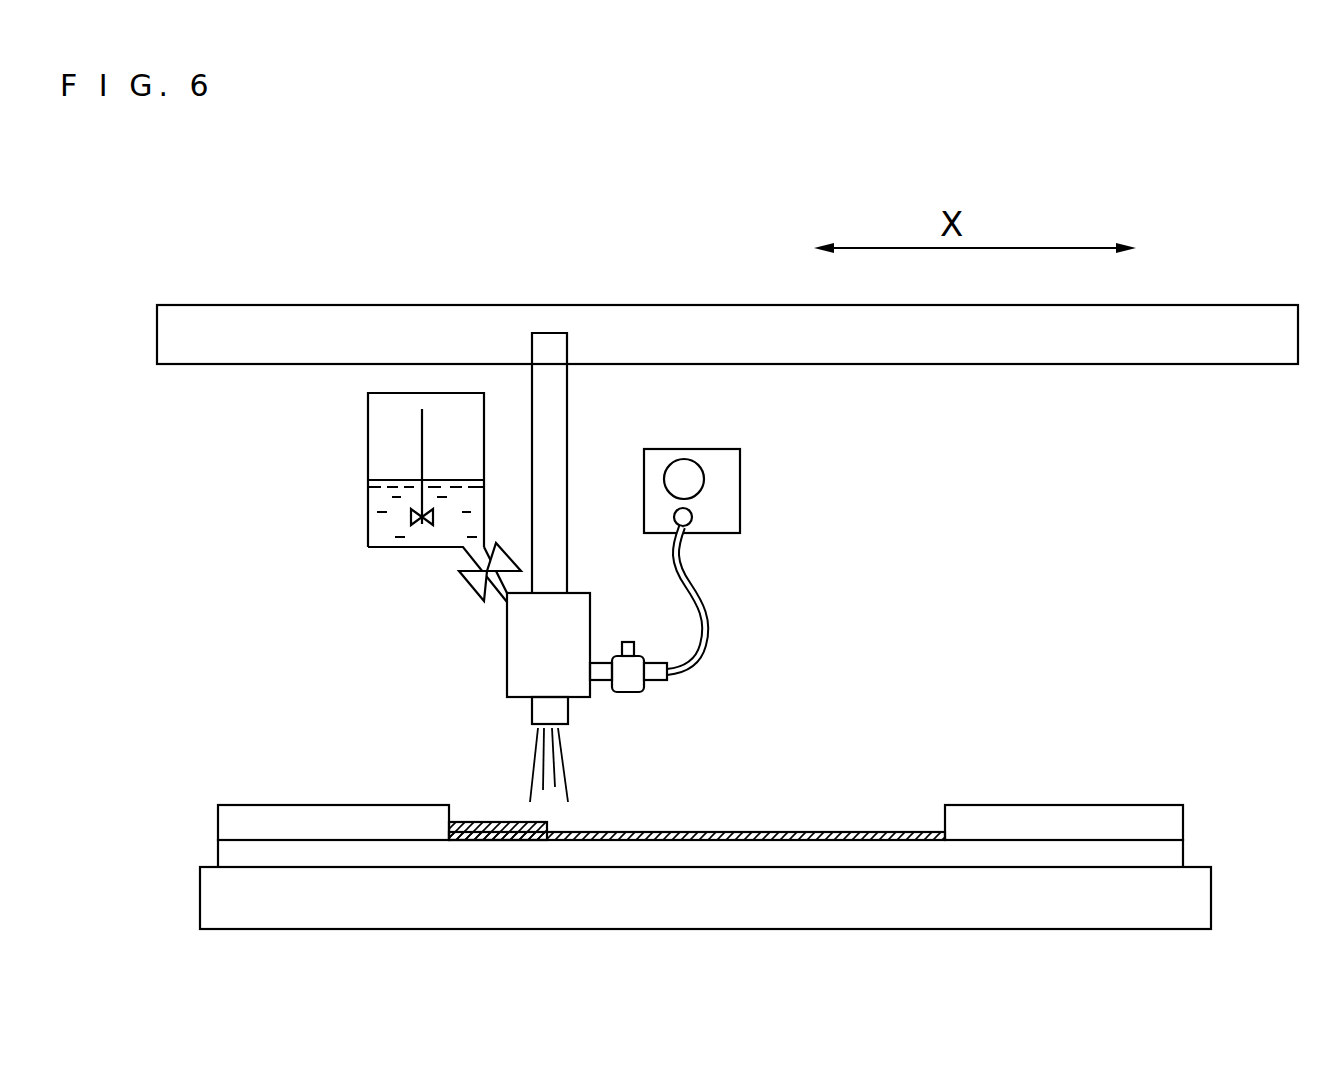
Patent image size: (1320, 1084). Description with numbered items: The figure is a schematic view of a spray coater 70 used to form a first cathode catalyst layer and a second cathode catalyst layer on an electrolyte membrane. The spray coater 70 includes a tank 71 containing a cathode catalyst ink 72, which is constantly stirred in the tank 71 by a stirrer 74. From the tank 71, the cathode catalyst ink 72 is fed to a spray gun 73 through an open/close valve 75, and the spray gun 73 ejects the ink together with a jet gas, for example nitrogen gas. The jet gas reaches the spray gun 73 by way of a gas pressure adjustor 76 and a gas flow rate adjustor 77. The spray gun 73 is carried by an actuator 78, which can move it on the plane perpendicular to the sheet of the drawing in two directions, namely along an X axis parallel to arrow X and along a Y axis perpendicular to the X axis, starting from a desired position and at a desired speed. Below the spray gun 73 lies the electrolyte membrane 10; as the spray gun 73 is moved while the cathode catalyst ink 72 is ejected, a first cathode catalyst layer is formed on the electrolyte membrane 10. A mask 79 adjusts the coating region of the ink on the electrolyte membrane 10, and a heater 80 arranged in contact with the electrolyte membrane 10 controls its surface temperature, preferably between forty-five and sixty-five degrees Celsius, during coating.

The spray coater 70 is at (1249, 266).
The actuator 78 is at (303, 318).
The spray gun 73 is at (523, 661).
The tank 71 is at (368, 461).
The cathode catalyst ink 72 is at (390, 515).
The stirrer 74 is at (420, 427).
The open/close valve 75 is at (470, 590).
The gas pressure adjustor 76 is at (725, 472).
The gas flow rate adjustor 77 is at (631, 680).
The heater 80 is at (1196, 896).
The electrolyte membrane 10 is at (1160, 856).
The mask 79 is at (1106, 828).